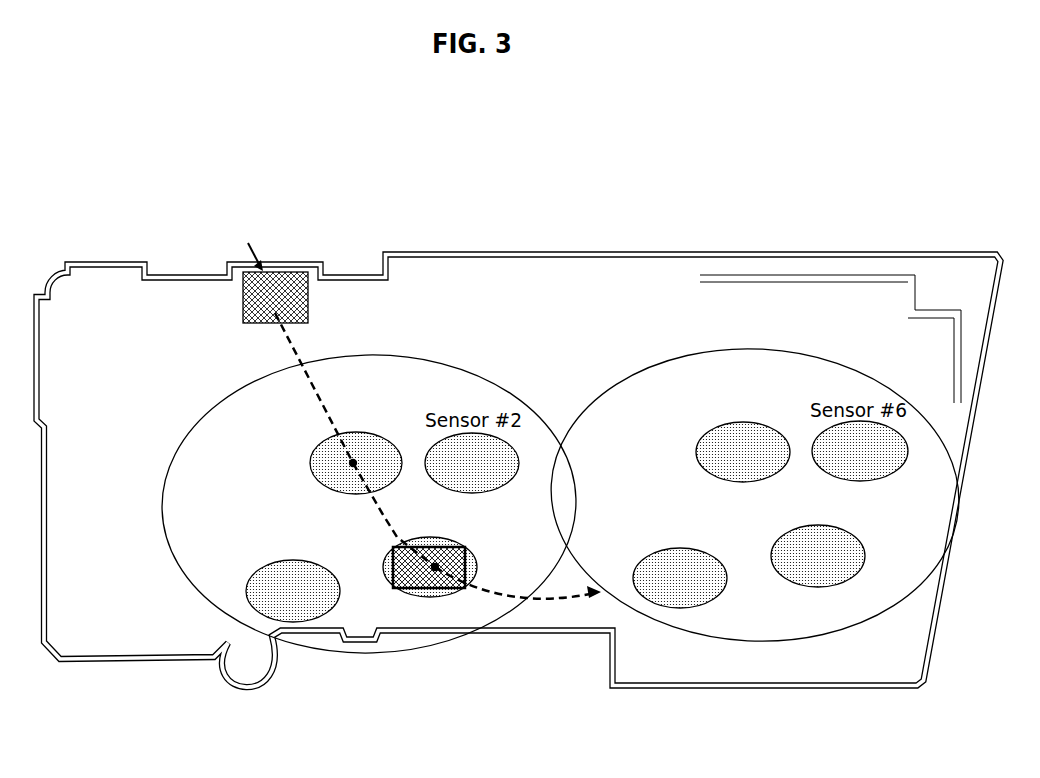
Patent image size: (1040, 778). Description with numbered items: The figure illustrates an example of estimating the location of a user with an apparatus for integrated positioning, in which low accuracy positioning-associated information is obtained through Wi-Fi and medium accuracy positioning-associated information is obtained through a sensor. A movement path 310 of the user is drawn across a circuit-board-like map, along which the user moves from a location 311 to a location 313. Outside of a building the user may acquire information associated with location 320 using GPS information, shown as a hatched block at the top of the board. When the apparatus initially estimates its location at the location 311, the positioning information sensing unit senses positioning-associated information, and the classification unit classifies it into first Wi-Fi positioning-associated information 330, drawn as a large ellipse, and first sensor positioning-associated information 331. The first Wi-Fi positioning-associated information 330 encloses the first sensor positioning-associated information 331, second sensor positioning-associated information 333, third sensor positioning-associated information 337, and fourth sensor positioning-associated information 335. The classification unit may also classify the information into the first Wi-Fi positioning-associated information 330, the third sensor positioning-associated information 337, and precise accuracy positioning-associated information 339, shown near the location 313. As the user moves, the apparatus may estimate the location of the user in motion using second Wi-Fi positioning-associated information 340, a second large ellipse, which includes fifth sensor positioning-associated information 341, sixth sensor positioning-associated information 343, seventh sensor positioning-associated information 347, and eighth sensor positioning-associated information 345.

The movement path 310 is at (566, 600).
The location 311 is at (350, 464).
The location 313 is at (435, 572).
The information associated with location 320 is at (297, 270).
The Wi-Fi #1 positioning-associated information 330 is at (370, 357).
The sensor #1 positioning-associated information 331 is at (313, 445).
The sensor #2 positioning-associated information 333 is at (561, 458).
The sensor #4 positioning-associated information 335 is at (280, 622).
The sensor #3 positioning-associated information 337 is at (452, 597).
The precise accuracy positioning-associated information 339 is at (413, 590).
The Wi-Fi #2 positioning-associated information 340 is at (755, 347).
The sensor #5 positioning-associated information 341 is at (718, 472).
The sensor #6 positioning-associated information 343 is at (955, 468).
The sensor #8 positioning-associated information 345 is at (668, 608).
The sensor #7 positioning-associated information 347 is at (837, 588).